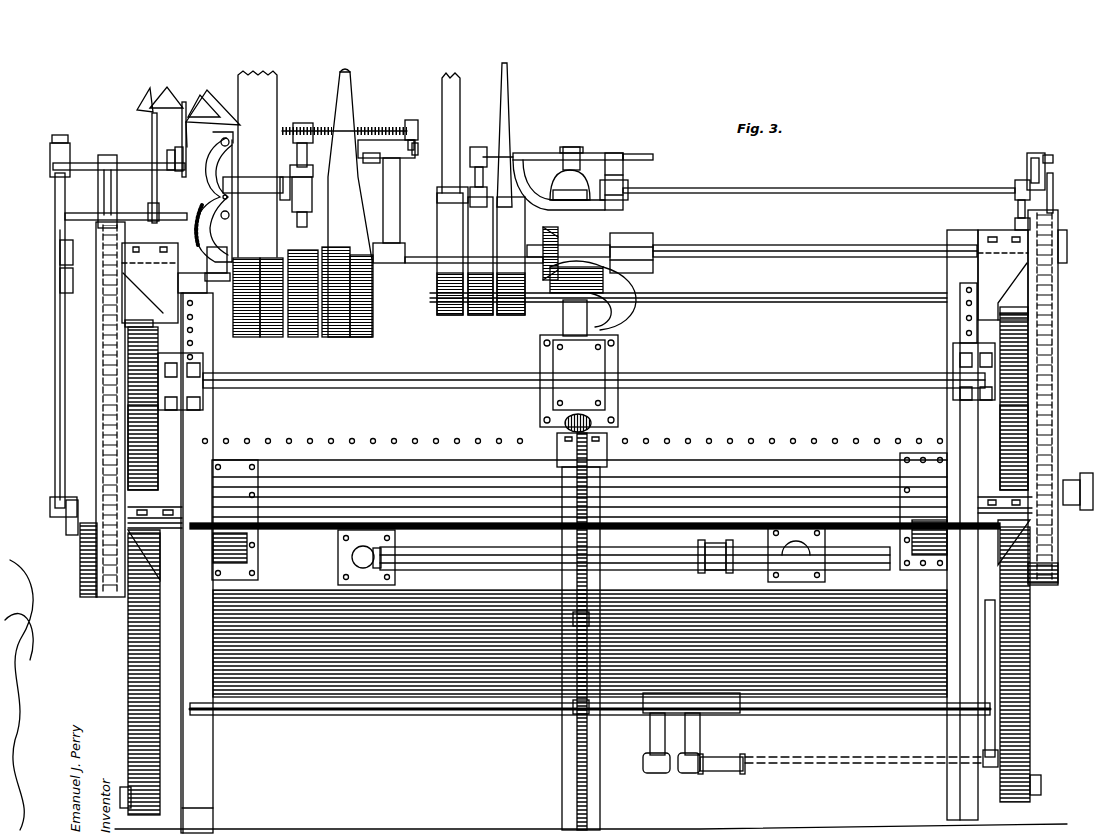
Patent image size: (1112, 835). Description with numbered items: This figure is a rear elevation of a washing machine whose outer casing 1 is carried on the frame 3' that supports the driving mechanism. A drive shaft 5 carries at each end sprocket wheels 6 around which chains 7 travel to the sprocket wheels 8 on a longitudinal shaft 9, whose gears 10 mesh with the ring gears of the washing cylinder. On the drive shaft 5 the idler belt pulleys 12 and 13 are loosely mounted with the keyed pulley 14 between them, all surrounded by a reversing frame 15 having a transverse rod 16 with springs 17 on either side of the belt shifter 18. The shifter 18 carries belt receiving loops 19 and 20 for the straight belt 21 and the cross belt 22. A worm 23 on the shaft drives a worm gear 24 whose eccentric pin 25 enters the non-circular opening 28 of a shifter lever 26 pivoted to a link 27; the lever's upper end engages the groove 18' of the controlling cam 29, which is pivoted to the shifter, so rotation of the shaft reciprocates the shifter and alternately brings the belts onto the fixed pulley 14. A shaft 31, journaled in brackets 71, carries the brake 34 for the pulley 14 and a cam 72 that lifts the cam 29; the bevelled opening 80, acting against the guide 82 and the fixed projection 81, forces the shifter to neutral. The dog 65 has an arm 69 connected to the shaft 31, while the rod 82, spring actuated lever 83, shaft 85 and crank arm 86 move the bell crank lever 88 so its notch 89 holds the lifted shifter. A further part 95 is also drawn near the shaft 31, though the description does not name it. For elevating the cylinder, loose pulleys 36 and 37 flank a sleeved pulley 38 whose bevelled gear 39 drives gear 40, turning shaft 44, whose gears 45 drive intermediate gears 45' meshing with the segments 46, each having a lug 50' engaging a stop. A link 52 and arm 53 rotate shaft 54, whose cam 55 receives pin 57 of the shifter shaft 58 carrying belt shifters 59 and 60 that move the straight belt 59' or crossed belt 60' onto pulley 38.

The outer casing 1 is at (433, 680).
The frame 3' is at (985, 275).
The drive shaft 5 is at (428, 264).
The sprocket wheels 6 is at (98, 280).
The chains 7 is at (97, 392).
The sprocket wheels 8 is at (90, 580).
The shaft 9 is at (463, 522).
The gears 10 is at (258, 507).
The belt pulley 12 is at (250, 330).
The belt pulley 13 is at (365, 330).
The pulley 14 is at (308, 330).
The reversing frame 15 is at (403, 160).
The transverse rod 16 is at (407, 123).
The springs 17 is at (289, 124).
The belt shifter 18 is at (305, 164).
The groove 18' is at (240, 126).
The belt receiving loop 19 is at (262, 195).
The belt receiving loop 20 is at (418, 148).
The belt 21 is at (272, 330).
The belt 22 is at (340, 330).
The worm 23 is at (228, 262).
The worm gear 24 is at (198, 200).
The eccentrically mounted pin 25 is at (255, 180).
The shifter lever 26 is at (207, 186).
The link 27 is at (213, 293).
The non-circular opening 28 is at (218, 216).
The controlling cam 29 is at (215, 112).
The shaft 31 is at (93, 163).
The brake 34 is at (330, 177).
The loose pulley 36 is at (445, 316).
The loose pulley 37 is at (505, 316).
The pulley 38 is at (476, 316).
The bevelled gear 39 is at (560, 243).
The gear 40 is at (560, 300).
The shaft 44 is at (310, 388).
The gears 45 is at (115, 408).
The intermediate gears 45' is at (113, 447).
The segments 46 is at (128, 702).
The lug 50' is at (117, 772).
The link 52 is at (1053, 205).
The arm 53 is at (1027, 163).
The shaft 54 is at (847, 188).
The cam 55 is at (592, 185).
The pin 57 is at (580, 165).
The shifter shaft 58 is at (640, 155).
The belt shifter 59 is at (441, 196).
The straight belt 59' is at (465, 133).
The belt shifter 60 is at (568, 171).
The crossed belt 60' is at (518, 135).
The dog 65 is at (70, 535).
The arm 69 is at (55, 335).
The brackets 71 is at (98, 195).
The cam 72 is at (167, 160).
The opening 80 is at (202, 95).
The projection 81 is at (184, 102).
The rod 82 is at (55, 375).
The spring actuated lever 83 is at (60, 517).
The shaft 85 is at (88, 220).
The crank arm 86 is at (148, 208).
The bell crank lever 88 is at (152, 120).
The notch 89 is at (146, 103).
The collar 95 is at (176, 147).